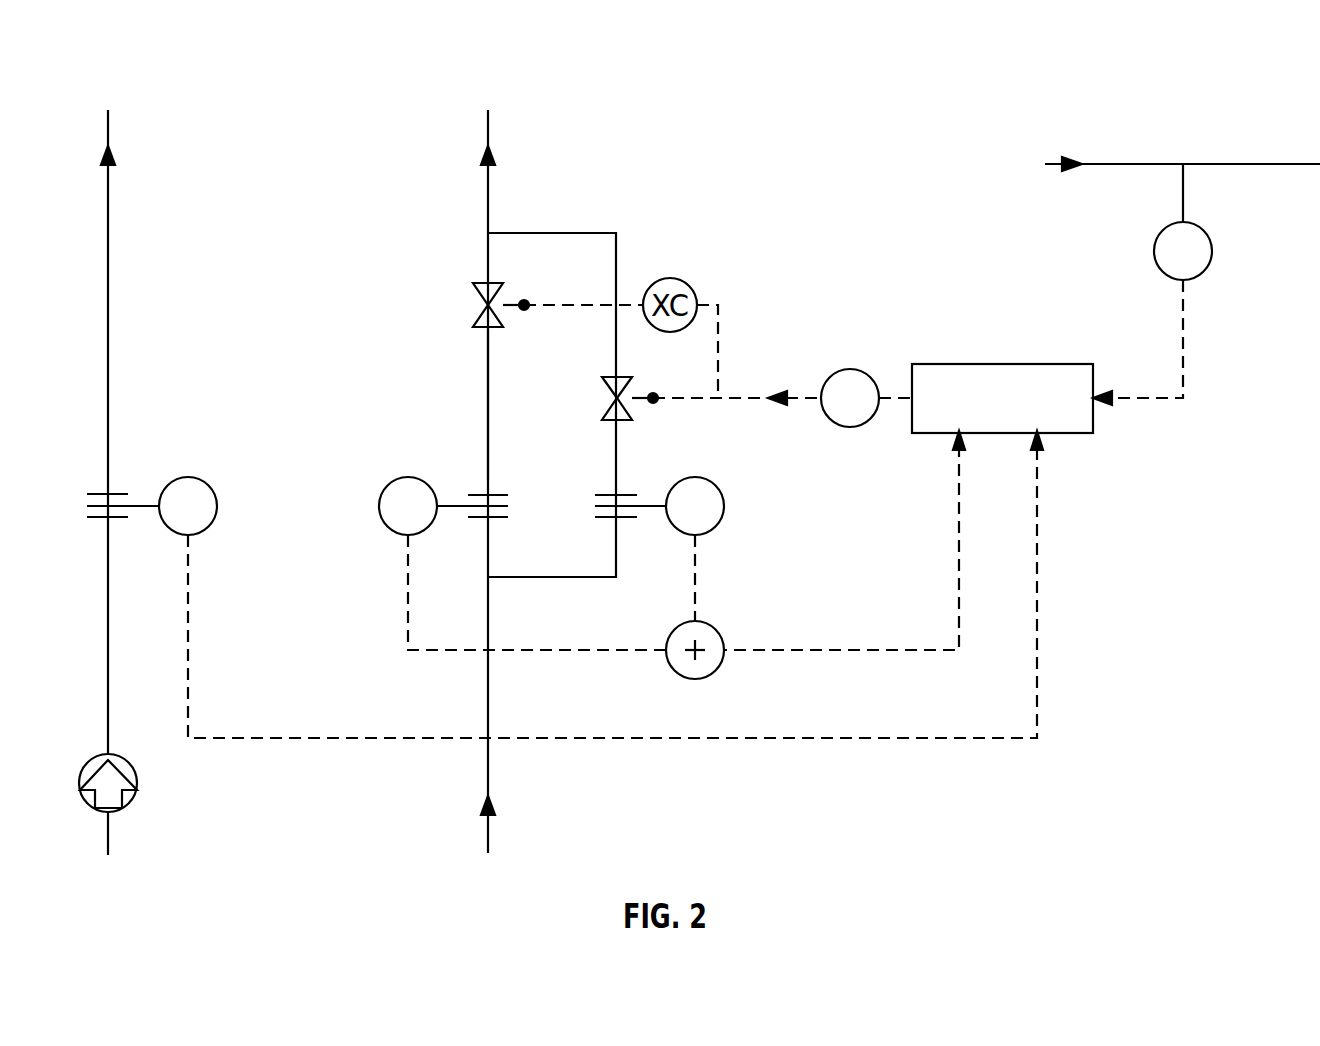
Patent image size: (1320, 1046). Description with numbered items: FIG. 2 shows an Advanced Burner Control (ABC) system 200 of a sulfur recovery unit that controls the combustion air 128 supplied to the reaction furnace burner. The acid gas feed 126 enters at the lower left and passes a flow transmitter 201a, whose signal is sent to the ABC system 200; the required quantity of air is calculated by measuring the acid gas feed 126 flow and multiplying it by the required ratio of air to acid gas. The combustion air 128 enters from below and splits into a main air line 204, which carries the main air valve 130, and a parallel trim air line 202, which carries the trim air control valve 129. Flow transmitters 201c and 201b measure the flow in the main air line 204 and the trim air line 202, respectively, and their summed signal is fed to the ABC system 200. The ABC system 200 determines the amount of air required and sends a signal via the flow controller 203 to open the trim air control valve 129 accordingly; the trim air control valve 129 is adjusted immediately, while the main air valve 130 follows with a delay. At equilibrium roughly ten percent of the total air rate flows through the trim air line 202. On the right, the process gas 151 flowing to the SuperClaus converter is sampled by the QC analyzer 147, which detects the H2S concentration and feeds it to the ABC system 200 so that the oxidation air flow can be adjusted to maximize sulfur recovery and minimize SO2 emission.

The acid gas feed 126 is at (108, 838).
The combustion air 128 is at (488, 840).
The trim air control valve 129 is at (630, 415).
The main air valve 130 is at (478, 283).
The QC analyzer 147 is at (1154, 251).
The process gas 151 is at (956, 147).
The Advanced Burner Control (ABC) system 200 is at (1027, 364).
The flow transmitter 201a is at (187, 477).
The flow transmitter 201b is at (715, 484).
The flow transmitter 201c is at (388, 485).
The trim air line 202 is at (616, 352).
The flow controller 203 is at (850, 369).
The main air line 204 is at (488, 392).